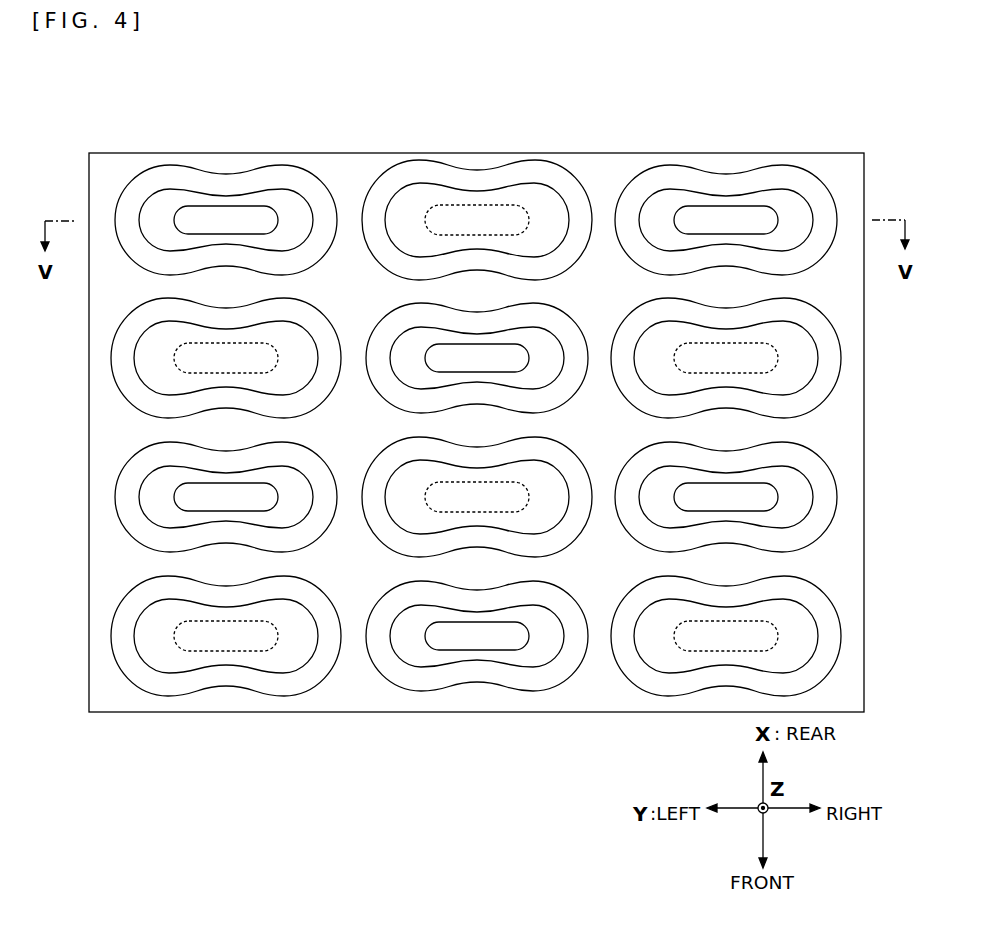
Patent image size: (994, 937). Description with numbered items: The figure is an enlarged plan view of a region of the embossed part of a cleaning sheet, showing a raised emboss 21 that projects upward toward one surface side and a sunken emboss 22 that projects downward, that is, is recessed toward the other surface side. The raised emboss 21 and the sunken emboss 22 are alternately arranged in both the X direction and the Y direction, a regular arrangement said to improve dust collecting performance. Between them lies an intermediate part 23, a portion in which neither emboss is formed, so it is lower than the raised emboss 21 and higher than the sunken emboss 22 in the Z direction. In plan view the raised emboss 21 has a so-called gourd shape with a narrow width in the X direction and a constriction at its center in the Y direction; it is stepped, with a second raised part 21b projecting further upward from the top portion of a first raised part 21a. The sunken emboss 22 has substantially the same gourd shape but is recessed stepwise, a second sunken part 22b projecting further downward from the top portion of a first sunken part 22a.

The raised emboss 21 is at (476, 377).
The first raised part 21a is at (272, 202).
The second raised part 21b is at (253, 99).
The sunken emboss 22 is at (476, 380).
The first sunken part 22a is at (432, 202).
The second sunken part 22b is at (472, 218).
The intermediate part 23 is at (341, 169).